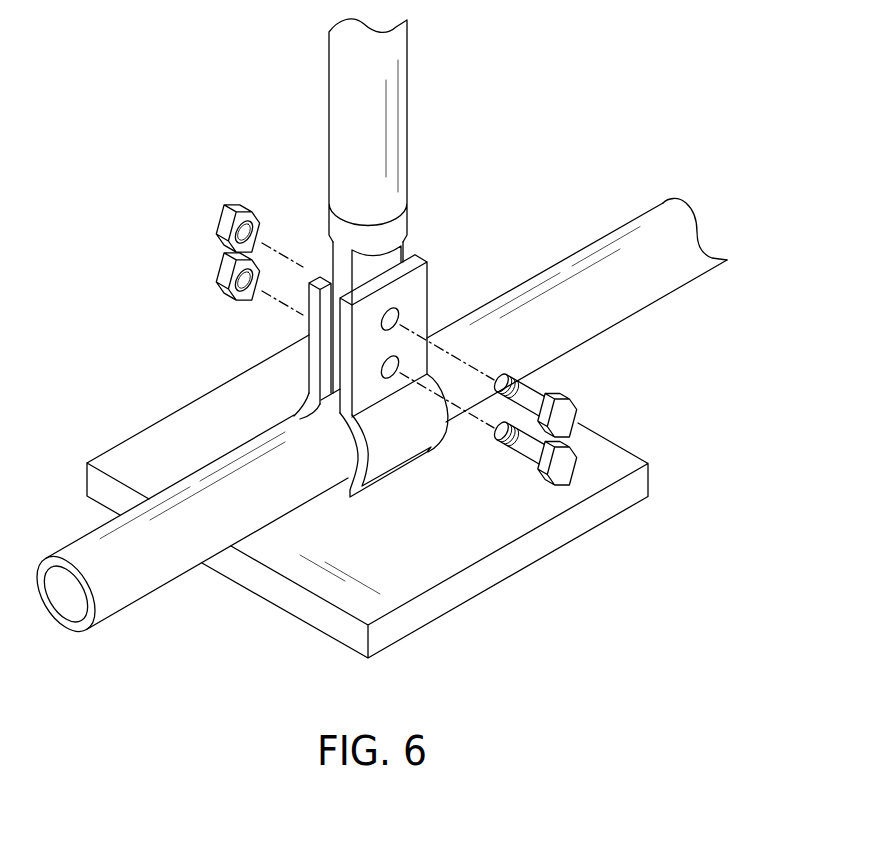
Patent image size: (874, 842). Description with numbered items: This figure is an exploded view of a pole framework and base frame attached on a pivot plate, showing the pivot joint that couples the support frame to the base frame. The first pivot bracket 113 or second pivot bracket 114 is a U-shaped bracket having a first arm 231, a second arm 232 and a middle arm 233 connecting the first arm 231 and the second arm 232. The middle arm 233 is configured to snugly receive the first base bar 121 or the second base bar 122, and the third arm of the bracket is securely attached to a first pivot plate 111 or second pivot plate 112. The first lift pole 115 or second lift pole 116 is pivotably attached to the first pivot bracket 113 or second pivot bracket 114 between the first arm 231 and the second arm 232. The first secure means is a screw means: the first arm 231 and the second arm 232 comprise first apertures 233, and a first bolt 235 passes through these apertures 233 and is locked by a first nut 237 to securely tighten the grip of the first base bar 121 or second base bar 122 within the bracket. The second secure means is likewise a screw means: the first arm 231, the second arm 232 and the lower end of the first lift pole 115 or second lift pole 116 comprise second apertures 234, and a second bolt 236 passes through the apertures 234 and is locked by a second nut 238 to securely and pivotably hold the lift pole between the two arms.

The first pivot plate 111 is at (367, 513).
The second pivot plate 112 is at (448, 610).
The first pivot bracket 113 is at (446, 311).
The second pivot bracket 114 is at (421, 303).
The first lift pole 115 is at (438, 130).
The second lift pole 116 is at (407, 125).
The first base bar 121 is at (396, 419).
The second base bar 122 is at (610, 330).
The first arm 231 is at (430, 258).
The second arm 232 is at (325, 277).
The middle arm 233 is at (384, 367).
The second apertures 234 is at (384, 321).
The first bolt 235 is at (569, 473).
The second bolt 236 is at (566, 412).
The first nut 237 is at (215, 283).
The second nut 238 is at (230, 210).